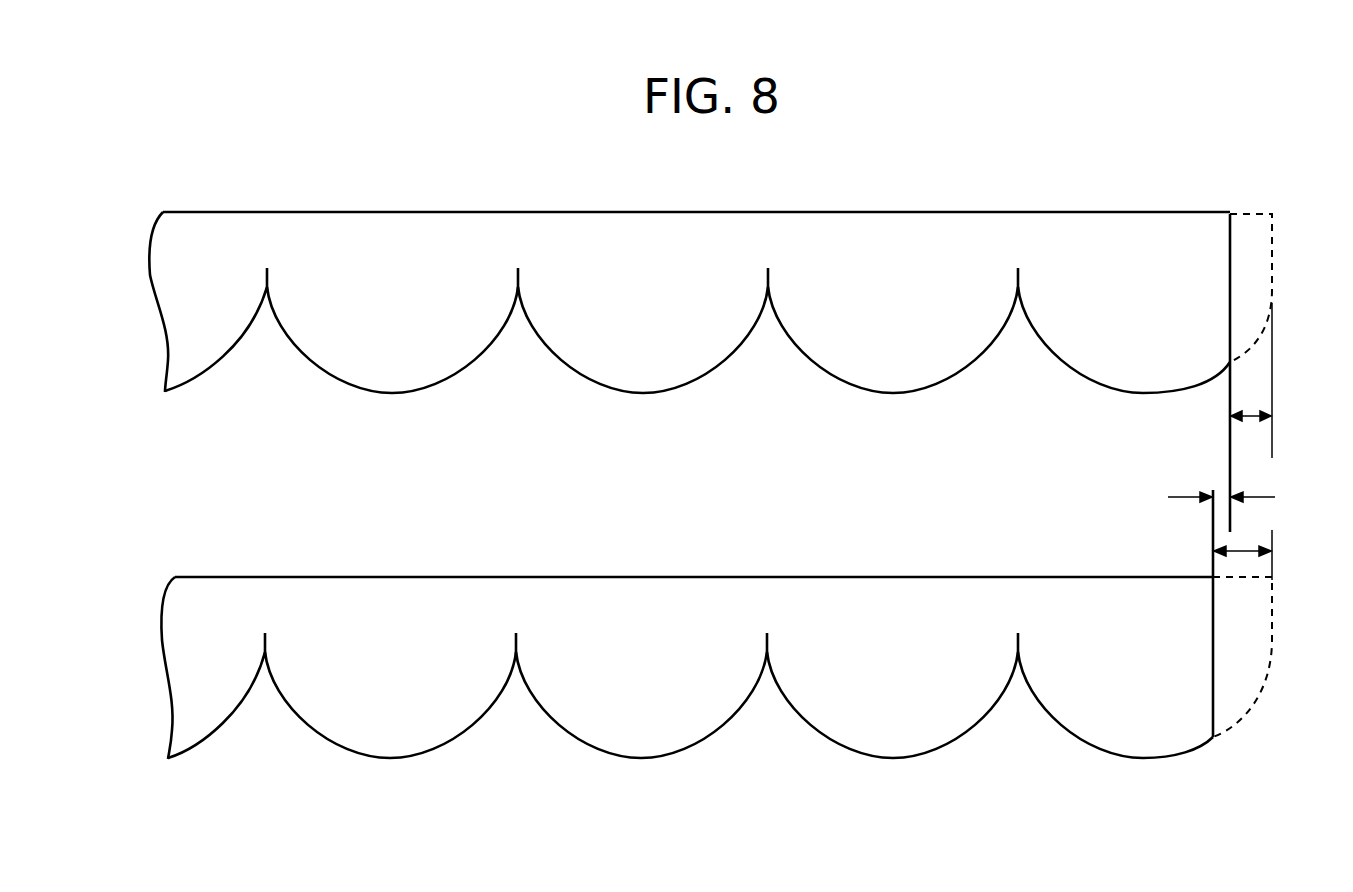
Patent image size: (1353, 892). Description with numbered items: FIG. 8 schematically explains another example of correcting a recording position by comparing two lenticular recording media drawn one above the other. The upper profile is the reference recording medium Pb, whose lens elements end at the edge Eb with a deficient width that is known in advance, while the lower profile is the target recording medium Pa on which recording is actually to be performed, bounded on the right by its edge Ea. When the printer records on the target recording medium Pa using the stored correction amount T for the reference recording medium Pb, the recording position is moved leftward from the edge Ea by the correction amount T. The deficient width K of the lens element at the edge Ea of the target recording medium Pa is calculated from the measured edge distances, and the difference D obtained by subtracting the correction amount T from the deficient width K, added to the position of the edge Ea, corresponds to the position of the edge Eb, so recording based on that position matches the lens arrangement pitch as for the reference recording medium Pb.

The reference recording medium Pb is at (188, 343).
The target recording medium Pa is at (188, 693).
The edge of the reference recording medium Eb is at (1231, 262).
The edge of the target recording medium Ea is at (1215, 663).
The correction amount T is at (1252, 412).
The difference D is at (1262, 497).
The deficient width K is at (1233, 548).